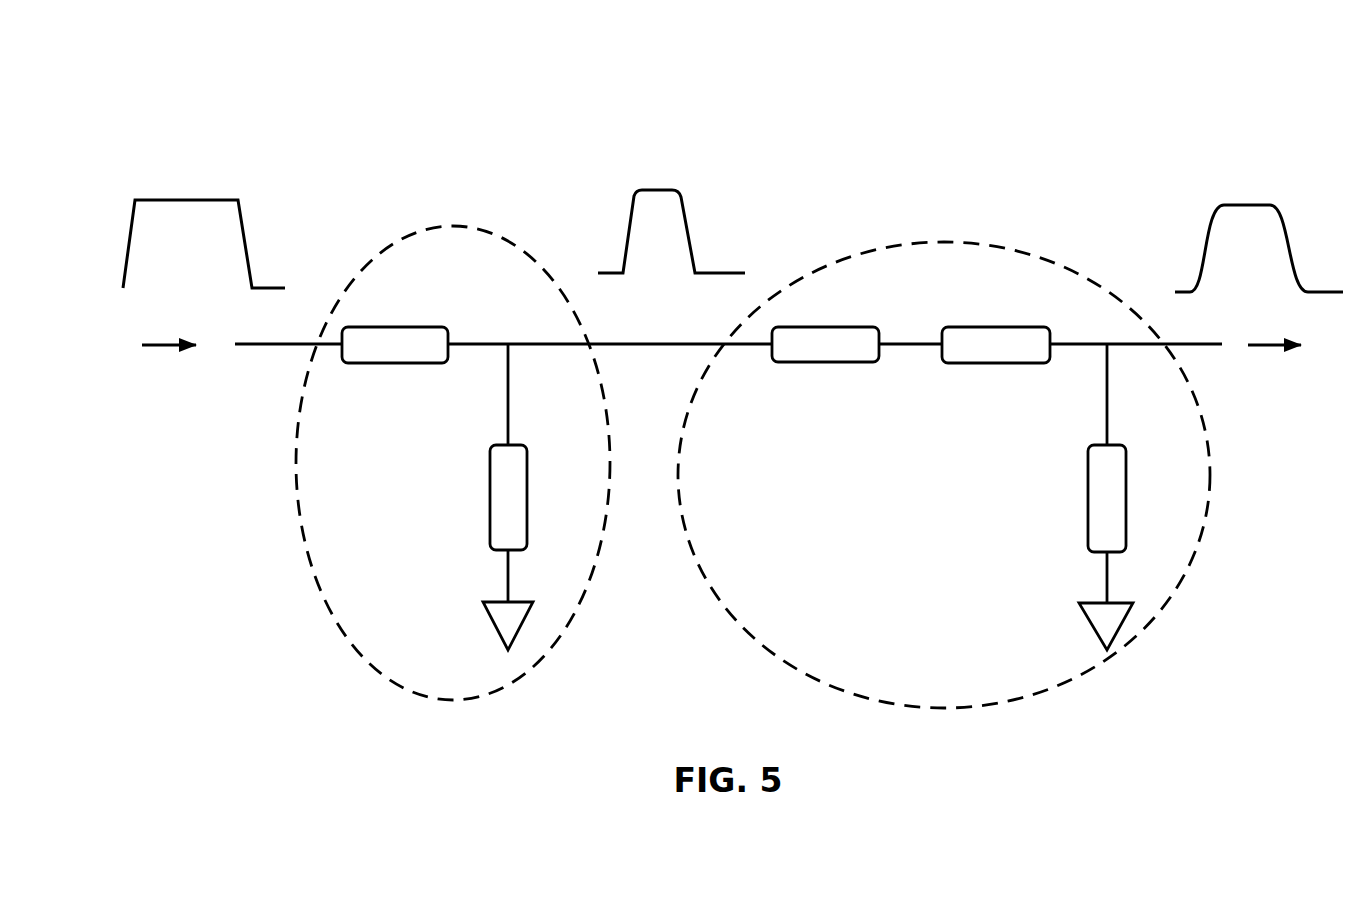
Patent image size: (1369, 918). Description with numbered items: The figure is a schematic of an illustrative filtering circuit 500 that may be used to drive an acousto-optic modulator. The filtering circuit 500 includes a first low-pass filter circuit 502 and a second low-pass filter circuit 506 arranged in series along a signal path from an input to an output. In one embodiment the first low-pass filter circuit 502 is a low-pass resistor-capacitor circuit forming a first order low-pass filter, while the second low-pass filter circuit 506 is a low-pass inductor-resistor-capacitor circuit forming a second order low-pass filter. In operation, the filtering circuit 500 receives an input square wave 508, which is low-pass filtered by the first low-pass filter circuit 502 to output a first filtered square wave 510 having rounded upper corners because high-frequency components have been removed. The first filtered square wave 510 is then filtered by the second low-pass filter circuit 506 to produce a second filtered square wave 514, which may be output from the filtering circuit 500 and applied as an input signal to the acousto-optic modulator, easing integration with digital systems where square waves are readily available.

The filtering circuit 500 is at (703, 54).
The first low-pass filter circuit 502 is at (453, 227).
The second low-pass filter circuit 506 is at (1085, 277).
The input square wave 508 is at (265, 188).
The first filtered square wave 510 is at (734, 195).
The second filtered square wave 514 is at (1257, 183).